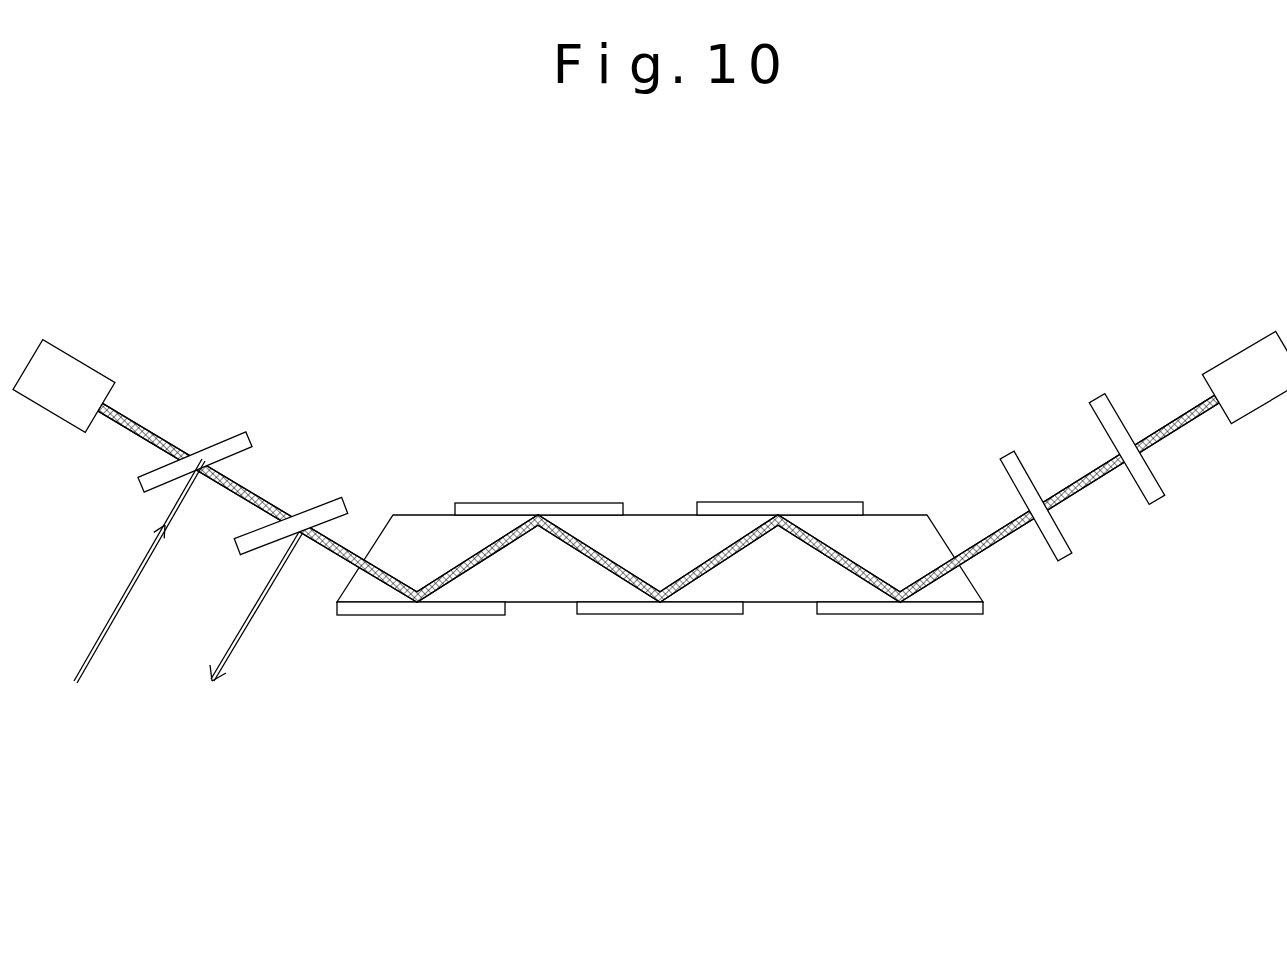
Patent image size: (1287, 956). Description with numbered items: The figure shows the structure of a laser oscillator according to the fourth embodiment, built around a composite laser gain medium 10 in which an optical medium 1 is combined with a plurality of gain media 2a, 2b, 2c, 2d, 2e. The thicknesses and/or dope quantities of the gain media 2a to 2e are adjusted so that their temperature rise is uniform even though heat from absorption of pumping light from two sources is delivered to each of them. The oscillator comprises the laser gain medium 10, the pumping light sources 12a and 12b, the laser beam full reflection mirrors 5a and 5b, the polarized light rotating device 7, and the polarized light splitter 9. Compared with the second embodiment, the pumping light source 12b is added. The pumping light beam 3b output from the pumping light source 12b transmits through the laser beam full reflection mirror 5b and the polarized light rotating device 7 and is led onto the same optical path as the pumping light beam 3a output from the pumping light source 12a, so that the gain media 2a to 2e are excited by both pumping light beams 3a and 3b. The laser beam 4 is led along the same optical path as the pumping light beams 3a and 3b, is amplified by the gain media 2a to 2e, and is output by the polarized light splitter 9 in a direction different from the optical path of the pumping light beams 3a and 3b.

The optical medium 1 is at (908, 530).
The gain medium 2a is at (420, 615).
The gain medium 2b is at (540, 503).
The gain medium 2c is at (685, 614).
The gain medium 2d is at (778, 502).
The gain medium 2e is at (900, 614).
The pumping light beam 3a is at (130, 432).
The pumping light beam 3b is at (1170, 425).
The laser beam 4 is at (92, 650).
The laser beam full reflection mirror 5a is at (215, 445).
The laser beam full reflection mirror 5b is at (1098, 408).
The polarized light rotating device 7 is at (1005, 460).
The polarized light splitter 9 is at (325, 500).
The laser gain medium 10 is at (665, 652).
The pumping light source 12a is at (78, 375).
The pumping light source 12b is at (1242, 360).